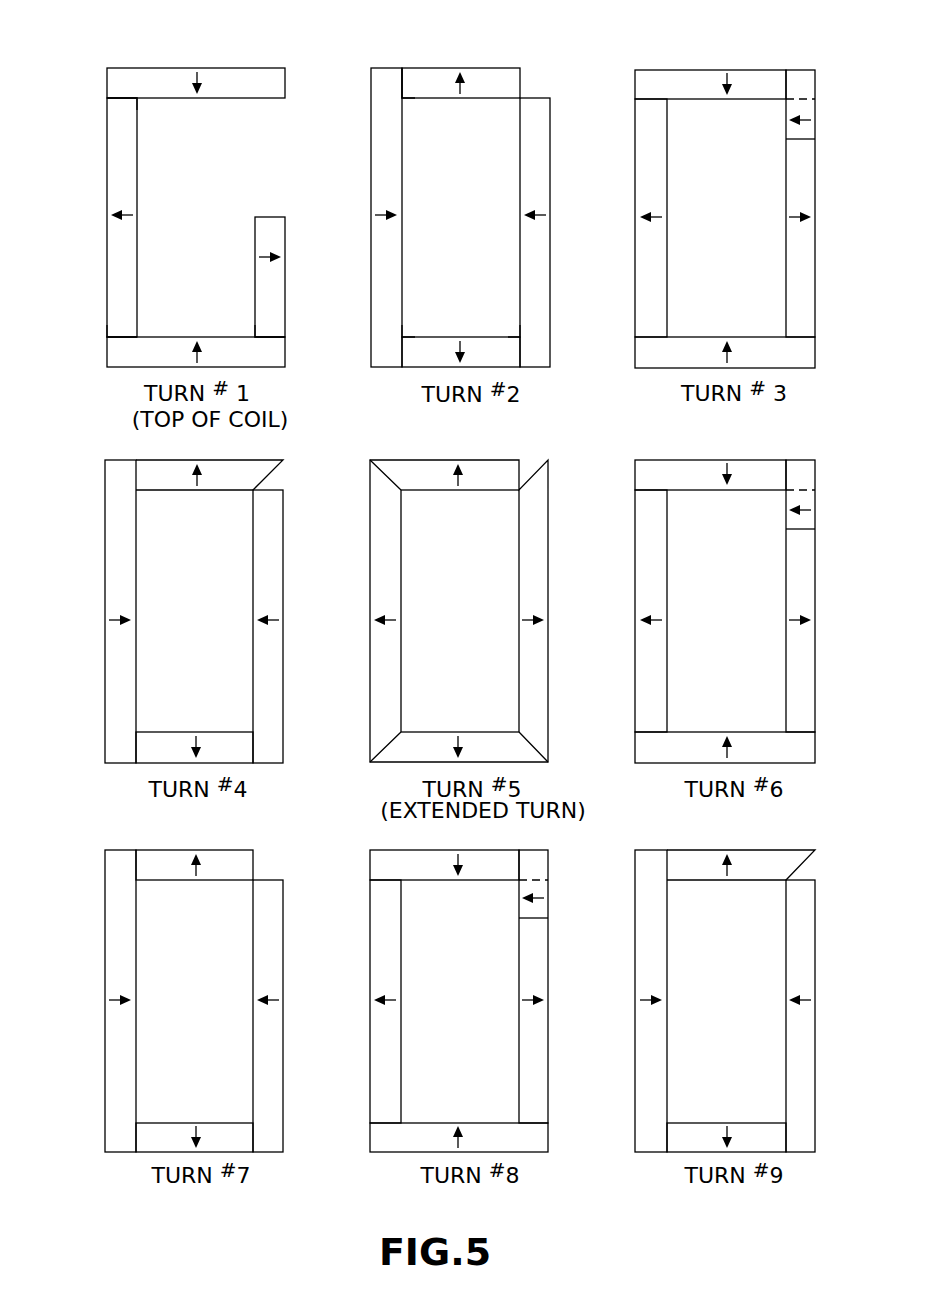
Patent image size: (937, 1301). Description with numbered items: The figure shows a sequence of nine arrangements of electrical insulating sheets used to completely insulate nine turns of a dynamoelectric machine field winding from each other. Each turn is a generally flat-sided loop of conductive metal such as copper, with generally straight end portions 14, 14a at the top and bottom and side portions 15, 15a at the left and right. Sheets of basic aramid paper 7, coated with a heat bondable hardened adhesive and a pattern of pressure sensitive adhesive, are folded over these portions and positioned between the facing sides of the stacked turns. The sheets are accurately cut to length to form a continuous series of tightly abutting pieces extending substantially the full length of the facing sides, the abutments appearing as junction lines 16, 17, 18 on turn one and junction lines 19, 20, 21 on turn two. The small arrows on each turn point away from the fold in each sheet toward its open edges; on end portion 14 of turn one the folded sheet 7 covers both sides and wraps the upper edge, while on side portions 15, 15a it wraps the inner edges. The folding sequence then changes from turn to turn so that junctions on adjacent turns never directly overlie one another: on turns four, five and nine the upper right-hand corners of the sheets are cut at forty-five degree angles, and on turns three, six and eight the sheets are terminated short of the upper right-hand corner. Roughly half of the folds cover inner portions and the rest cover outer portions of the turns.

The aramid paper 7 is at (183, 191).
The end portion 14 is at (181, 66).
The end portion 14a is at (178, 336).
The side portion 15 is at (138, 245).
The side portion 15a is at (254, 239).
The junction line 16 is at (118, 98).
The junction line 17 is at (116, 336).
The junction line 18 is at (277, 337).
The junction line 19 is at (404, 76).
The junction line 20 is at (404, 346).
The junction line 21 is at (520, 345).